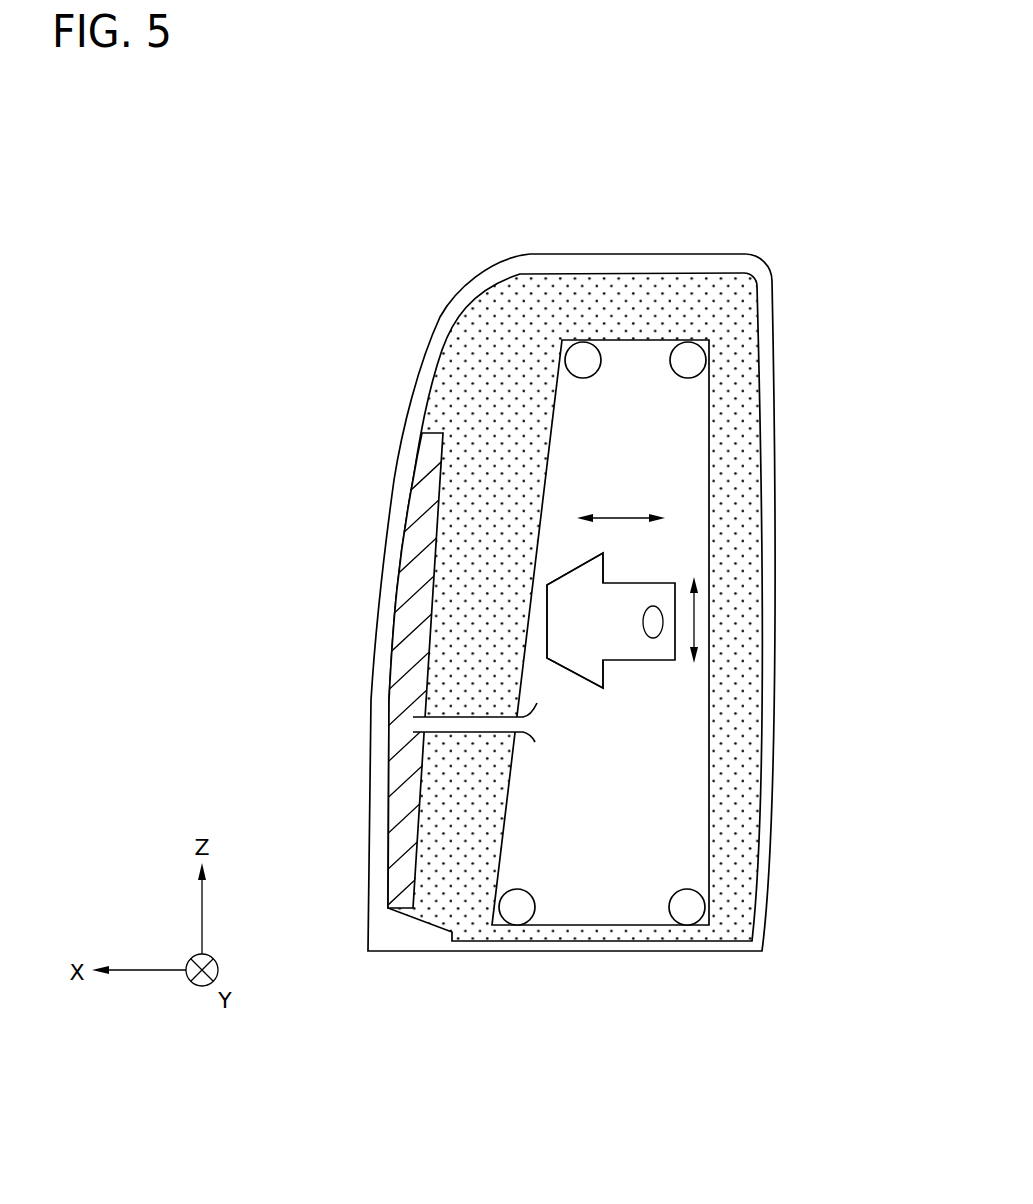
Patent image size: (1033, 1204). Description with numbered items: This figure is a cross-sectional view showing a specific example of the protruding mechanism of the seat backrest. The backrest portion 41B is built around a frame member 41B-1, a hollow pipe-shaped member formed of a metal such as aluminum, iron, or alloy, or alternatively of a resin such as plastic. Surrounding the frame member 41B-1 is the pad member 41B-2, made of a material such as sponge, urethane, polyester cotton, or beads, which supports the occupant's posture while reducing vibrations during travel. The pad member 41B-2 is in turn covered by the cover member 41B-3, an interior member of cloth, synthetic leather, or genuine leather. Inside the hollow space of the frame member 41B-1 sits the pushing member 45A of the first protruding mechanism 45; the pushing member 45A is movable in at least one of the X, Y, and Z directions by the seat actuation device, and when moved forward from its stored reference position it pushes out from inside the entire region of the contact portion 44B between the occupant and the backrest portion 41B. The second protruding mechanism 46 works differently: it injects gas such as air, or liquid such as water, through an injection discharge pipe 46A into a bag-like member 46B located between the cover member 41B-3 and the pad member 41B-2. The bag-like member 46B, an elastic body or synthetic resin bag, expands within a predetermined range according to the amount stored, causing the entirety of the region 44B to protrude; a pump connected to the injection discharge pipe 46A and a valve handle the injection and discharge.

The backrest portion 41B is at (826, 92).
The frame member 41B-1 is at (669, 357).
The pad member 41B-2 is at (538, 288).
The cover member 41B-3 is at (462, 293).
The contact portion 44B is at (330, 657).
The first protruding mechanism 45 is at (652, 684).
The pushing member 45A is at (607, 568).
The second protruding mechanism 46 is at (390, 536).
The injection discharge pipe 46A is at (460, 732).
The bag-like member 46B is at (420, 472).